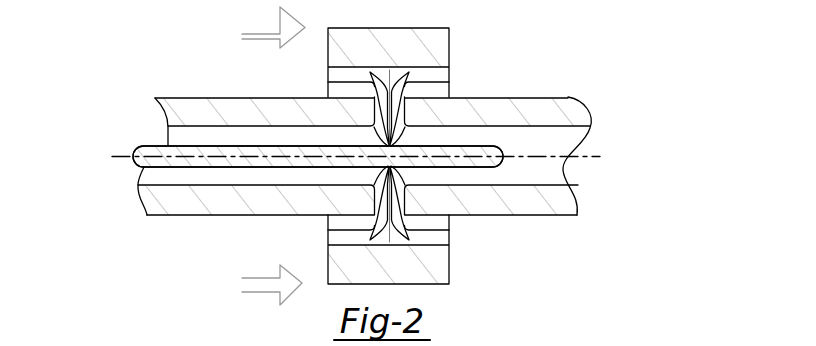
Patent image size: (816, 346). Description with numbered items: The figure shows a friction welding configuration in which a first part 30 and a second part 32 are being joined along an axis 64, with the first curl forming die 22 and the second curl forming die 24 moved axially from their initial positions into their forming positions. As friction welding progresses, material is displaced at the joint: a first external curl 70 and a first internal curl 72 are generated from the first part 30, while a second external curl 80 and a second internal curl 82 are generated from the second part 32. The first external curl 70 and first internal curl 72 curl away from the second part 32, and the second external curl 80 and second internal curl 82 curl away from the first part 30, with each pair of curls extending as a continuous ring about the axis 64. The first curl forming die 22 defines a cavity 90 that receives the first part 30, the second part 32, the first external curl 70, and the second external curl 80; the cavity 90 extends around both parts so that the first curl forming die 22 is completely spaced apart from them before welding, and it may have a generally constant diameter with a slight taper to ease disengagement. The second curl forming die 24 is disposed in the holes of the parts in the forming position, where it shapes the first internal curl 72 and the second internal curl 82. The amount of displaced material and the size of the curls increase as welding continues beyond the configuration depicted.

The first curl forming die 22 is at (437, 28).
The second curl forming die 24 is at (155, 146).
The first part 30 is at (167, 97).
The second part 32 is at (543, 97).
The axis 64 is at (597, 160).
The first external curl 70 is at (371, 73).
The first internal curl 72 is at (378, 145).
The second external curl 80 is at (408, 73).
The second internal curl 82 is at (399, 146).
The cavity 90 is at (434, 240).